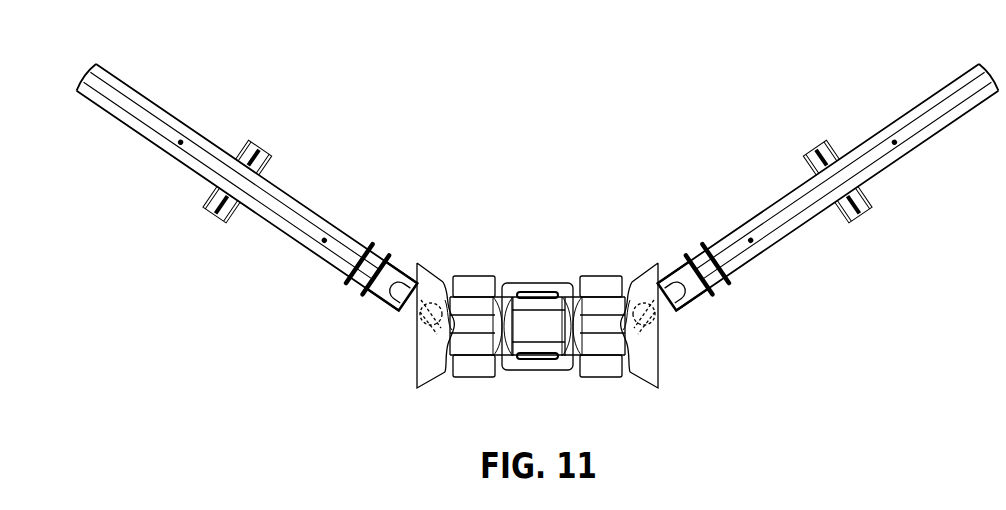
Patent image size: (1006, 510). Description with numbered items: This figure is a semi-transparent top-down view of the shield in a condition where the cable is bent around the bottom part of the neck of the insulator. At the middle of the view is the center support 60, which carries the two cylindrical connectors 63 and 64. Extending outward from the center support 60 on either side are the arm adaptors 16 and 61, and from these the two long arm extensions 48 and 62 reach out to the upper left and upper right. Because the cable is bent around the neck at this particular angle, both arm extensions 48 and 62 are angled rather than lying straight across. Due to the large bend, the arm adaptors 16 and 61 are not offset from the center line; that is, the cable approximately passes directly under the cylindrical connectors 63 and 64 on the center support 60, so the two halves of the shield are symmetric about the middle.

The arm extension 48 is at (321, 217).
The arm extension 62 is at (772, 205).
The arm adaptor 16 is at (395, 307).
The arm adaptor 61 is at (667, 320).
The cylindrical connector 63 is at (453, 303).
The cylindrical connector 64 is at (622, 303).
The center support 60 is at (513, 392).